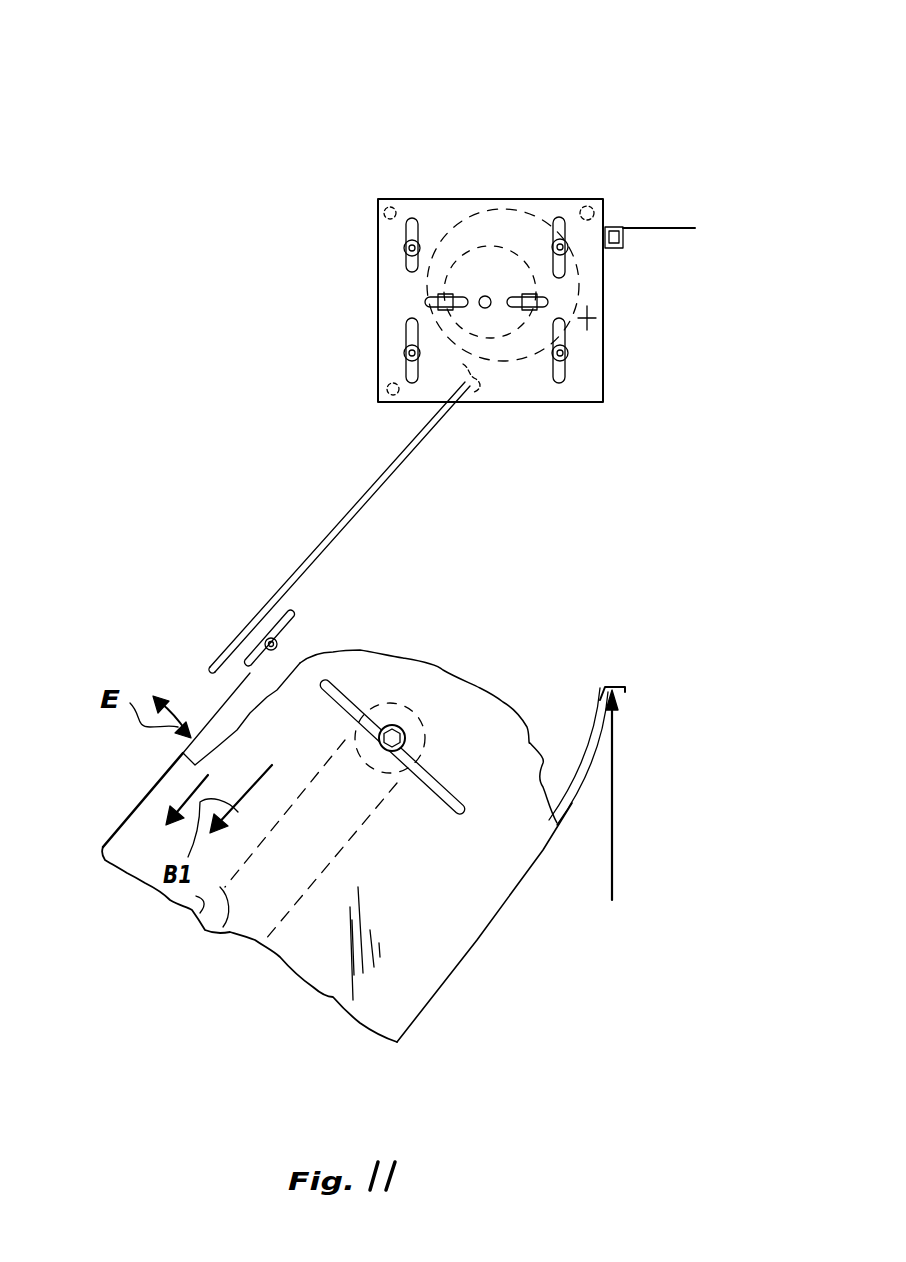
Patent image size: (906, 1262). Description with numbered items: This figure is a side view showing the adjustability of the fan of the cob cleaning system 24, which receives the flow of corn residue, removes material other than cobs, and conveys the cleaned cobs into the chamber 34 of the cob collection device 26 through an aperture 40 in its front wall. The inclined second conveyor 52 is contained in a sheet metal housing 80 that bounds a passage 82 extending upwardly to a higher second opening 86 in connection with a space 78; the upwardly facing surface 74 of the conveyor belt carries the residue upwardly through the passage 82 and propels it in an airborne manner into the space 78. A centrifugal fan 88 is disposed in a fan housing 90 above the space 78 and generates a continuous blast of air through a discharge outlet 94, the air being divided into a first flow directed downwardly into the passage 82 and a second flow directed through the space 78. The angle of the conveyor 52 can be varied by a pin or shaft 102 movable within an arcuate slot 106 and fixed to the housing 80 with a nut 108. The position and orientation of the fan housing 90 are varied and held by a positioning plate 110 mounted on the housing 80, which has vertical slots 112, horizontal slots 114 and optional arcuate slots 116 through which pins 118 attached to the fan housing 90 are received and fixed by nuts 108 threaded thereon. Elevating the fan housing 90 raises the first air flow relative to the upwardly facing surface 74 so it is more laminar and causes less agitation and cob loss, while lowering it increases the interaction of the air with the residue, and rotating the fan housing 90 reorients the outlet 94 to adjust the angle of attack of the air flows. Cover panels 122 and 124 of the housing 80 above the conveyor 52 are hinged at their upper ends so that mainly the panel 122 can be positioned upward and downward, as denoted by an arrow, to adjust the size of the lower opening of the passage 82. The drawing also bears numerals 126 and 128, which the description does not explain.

The cob cleaning system 24 is at (120, 150).
The cob collection device 26 is at (682, 228).
The interior cavity or chamber 34 is at (782, 664).
The aperture 40 is at (632, 648).
The second conveyor 52 is at (218, 930).
The upwardly facing surface 74 is at (235, 943).
The space 78 is at (572, 705).
The housing 80 is at (118, 820).
The passage 82 is at (263, 683).
The second opening 86 is at (436, 472).
The fan 88 is at (491, 241).
The fan housing 90 is at (553, 223).
The discharge outlet 94 is at (596, 318).
The pin or shaft 102 is at (396, 725).
The arcuate slot 106 is at (463, 820).
The nuts 108 is at (404, 353).
The positioning plate 110 is at (603, 392).
The vertical slots 112 is at (410, 220).
The horizontal slots 114 is at (453, 285).
The arcuate slots 116 is at (517, 273).
The pins 118 is at (676, 350).
The cover panel 122 is at (183, 753).
The cover panel 124 is at (322, 547).
The clamp 126 is at (285, 644).
The rod pivot 128 is at (474, 370).